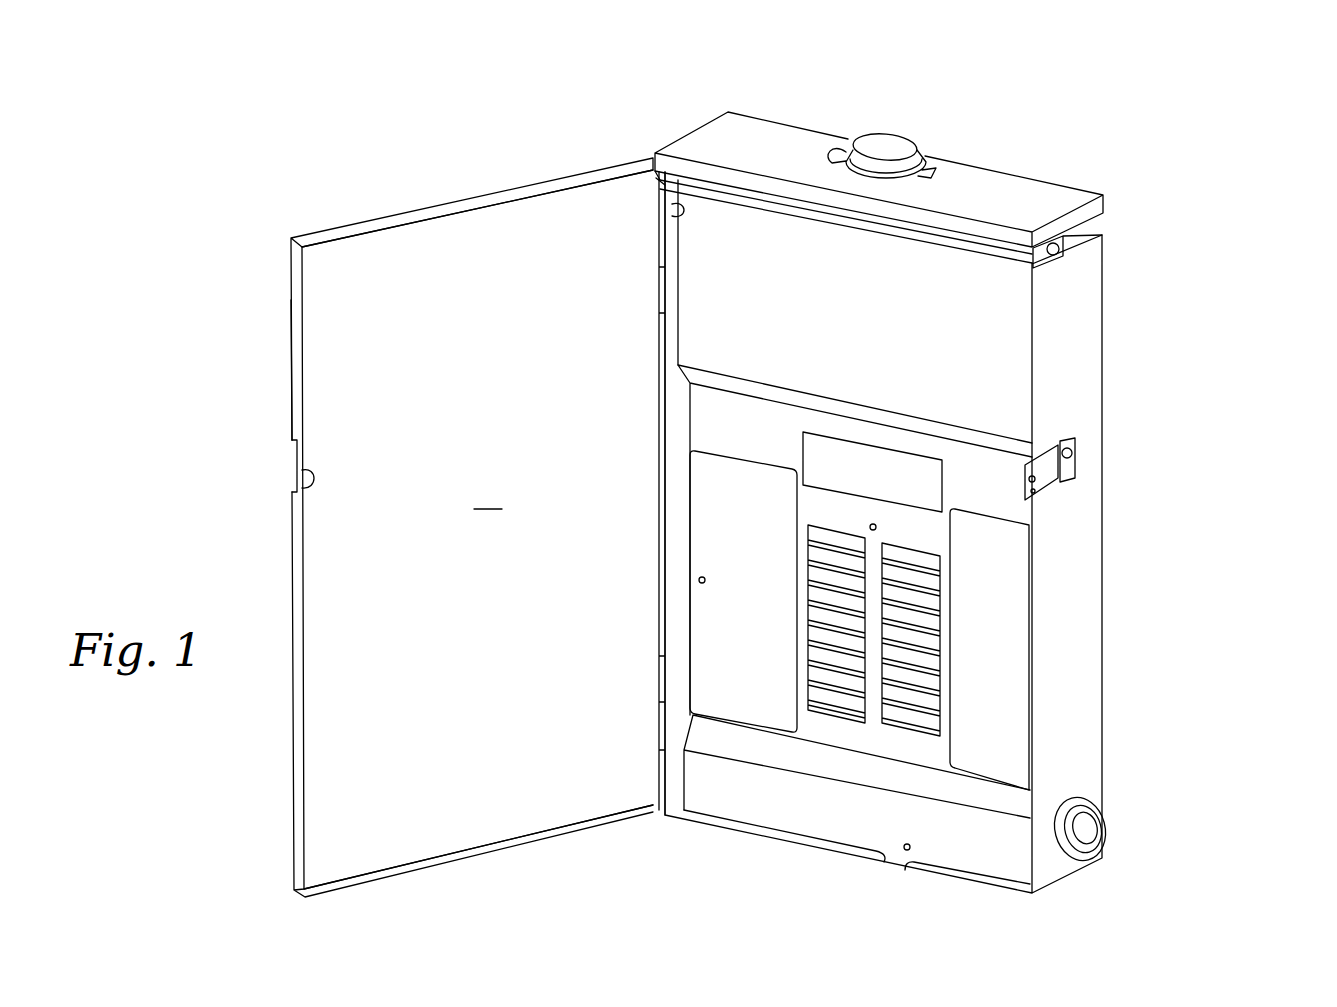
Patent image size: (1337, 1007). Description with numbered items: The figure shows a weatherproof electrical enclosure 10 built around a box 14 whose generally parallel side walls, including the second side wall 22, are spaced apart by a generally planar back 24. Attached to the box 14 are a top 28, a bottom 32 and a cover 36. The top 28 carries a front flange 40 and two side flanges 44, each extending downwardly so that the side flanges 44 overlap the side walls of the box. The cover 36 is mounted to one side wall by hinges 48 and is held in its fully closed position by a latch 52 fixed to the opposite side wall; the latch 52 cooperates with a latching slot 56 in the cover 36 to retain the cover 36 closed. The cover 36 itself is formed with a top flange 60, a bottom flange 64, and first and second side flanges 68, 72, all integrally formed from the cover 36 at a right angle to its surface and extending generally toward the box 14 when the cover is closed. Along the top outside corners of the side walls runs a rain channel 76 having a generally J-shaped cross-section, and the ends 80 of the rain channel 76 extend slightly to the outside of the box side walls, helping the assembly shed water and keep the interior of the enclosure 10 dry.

The weatherproof enclosure 10 is at (1148, 182).
The box 14 is at (1113, 395).
The second side wall 22 is at (683, 718).
The back 24 is at (1105, 777).
The top 28 is at (727, 133).
The bottom 32 is at (838, 852).
The cover 36 is at (447, 548).
The front flange 40 is at (778, 185).
The side flanges 44 is at (1082, 213).
The hinges 48 is at (659, 293).
The latch 52 is at (1050, 492).
The latching slot 56 is at (303, 487).
The top flange 60 is at (318, 233).
The bottom flange 64 is at (352, 886).
The first side flange 68 is at (292, 375).
The second side flange 72 is at (657, 202).
The rain channel 76 is at (1002, 266).
The ends of the rain channel 80 is at (1034, 262).